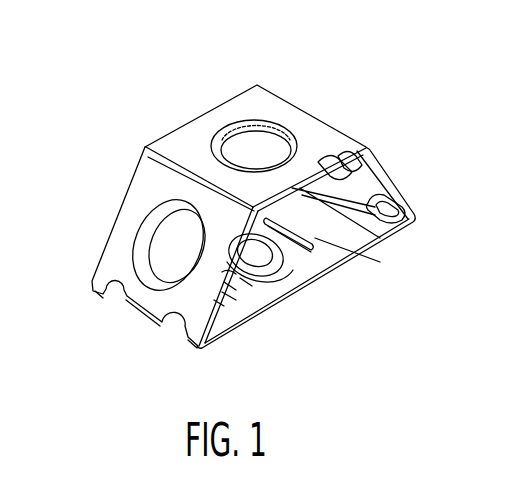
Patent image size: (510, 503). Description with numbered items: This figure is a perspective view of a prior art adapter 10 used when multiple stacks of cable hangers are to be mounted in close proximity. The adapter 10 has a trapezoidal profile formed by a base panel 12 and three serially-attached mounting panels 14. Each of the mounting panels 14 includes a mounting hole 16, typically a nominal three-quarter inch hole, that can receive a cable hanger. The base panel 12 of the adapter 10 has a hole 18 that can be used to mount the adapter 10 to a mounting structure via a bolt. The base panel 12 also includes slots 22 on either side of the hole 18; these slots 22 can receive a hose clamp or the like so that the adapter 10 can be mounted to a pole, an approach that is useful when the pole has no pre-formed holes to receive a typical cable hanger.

The adapter 10 is at (329, 72).
The base panel 12 is at (323, 260).
The mounting panels 14 is at (177, 138).
The mounting hole 16 is at (258, 150).
The hole 18 is at (255, 253).
The slots 22 is at (233, 283).